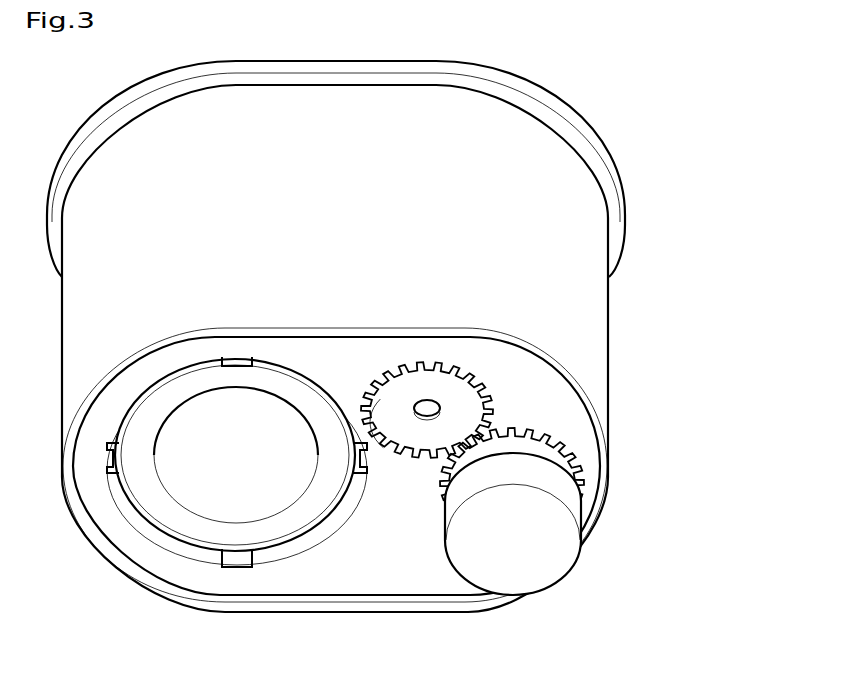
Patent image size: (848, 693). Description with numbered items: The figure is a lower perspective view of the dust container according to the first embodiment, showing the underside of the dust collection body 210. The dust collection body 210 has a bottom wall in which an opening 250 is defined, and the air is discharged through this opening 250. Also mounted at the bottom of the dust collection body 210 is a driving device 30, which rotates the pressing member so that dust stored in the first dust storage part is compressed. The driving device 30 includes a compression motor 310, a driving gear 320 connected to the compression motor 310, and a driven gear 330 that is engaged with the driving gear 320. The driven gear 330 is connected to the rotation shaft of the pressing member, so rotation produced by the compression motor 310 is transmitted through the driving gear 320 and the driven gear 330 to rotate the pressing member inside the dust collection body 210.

The dust collection body 210 is at (662, 313).
The driving device 30 is at (589, 505).
The opening 250 is at (178, 550).
The driven gear 330 is at (458, 402).
The driving gear 320 is at (583, 468).
The compression motor 310 is at (560, 542).